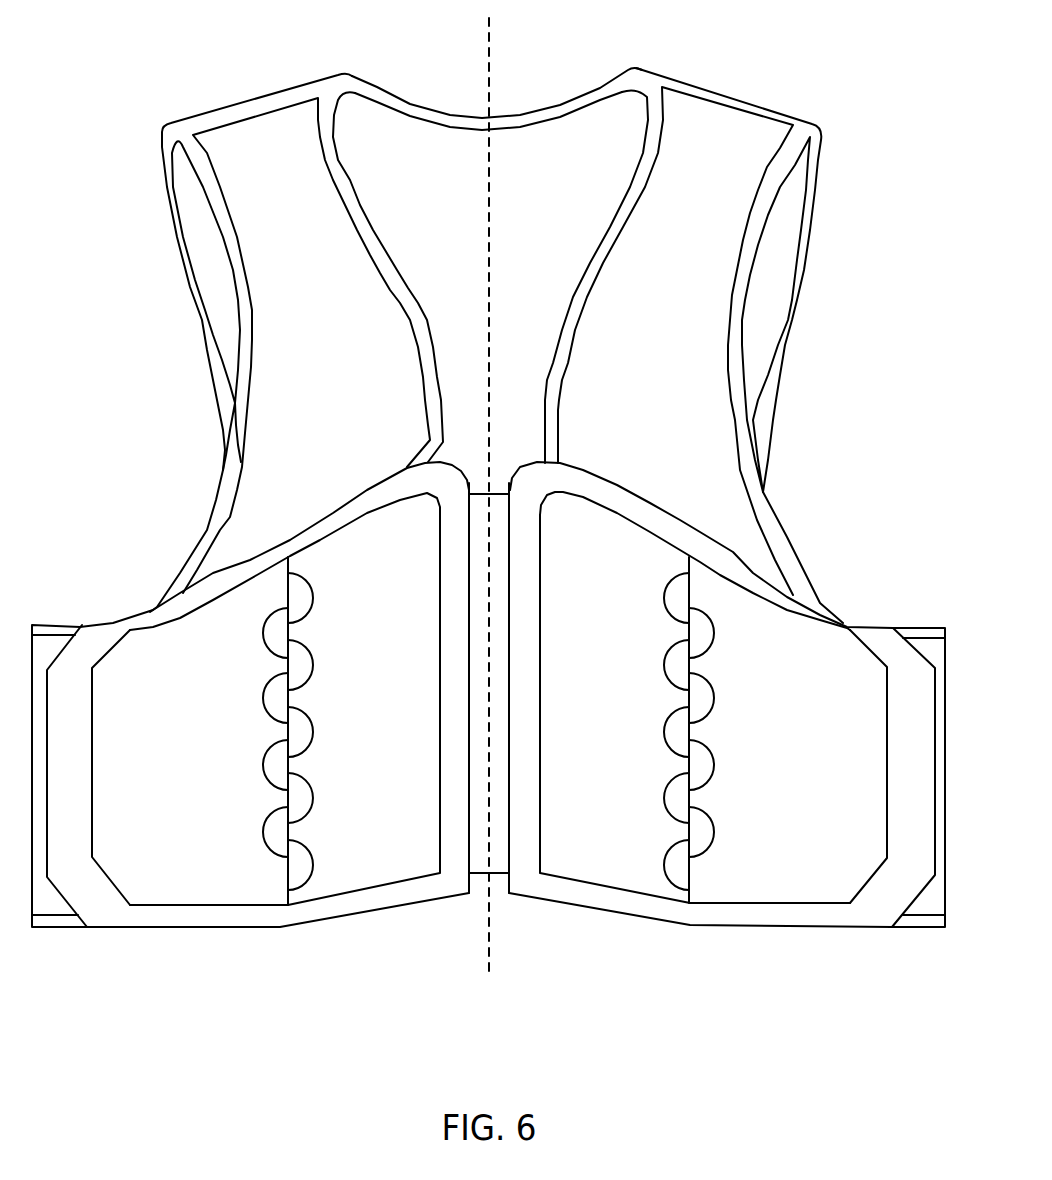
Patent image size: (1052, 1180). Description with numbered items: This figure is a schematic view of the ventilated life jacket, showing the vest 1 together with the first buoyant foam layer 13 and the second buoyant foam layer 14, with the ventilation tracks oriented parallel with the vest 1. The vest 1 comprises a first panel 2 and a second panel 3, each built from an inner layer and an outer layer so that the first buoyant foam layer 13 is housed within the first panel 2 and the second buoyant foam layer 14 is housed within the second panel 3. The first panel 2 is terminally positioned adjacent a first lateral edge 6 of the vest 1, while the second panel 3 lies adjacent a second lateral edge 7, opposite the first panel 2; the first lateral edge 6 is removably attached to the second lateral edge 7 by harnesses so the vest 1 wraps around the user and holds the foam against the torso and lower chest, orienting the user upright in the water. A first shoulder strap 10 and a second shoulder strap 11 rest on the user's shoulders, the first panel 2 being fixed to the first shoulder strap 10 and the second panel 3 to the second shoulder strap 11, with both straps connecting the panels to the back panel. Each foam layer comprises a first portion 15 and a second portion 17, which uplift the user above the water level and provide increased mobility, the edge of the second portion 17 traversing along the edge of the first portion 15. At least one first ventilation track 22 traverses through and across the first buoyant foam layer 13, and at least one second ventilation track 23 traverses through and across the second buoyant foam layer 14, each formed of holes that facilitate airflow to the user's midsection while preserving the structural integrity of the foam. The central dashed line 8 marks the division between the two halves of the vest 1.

The vest 1 is at (488, 497).
The first panel 2 is at (282, 652).
The second panel 3 is at (696, 652).
The first lateral edge 6 is at (470, 484).
The second lateral edge 7 is at (508, 484).
The center line 8 is at (489, 52).
The first shoulder strap 10 is at (270, 127).
The second shoulder strap 11 is at (757, 137).
The first buoyant foam layer 13 is at (114, 634).
The second buoyant foam layer 14 is at (872, 637).
The first portion 15 is at (312, 553).
The second portion 17 is at (255, 586).
The first ventilation track 22 is at (308, 668).
The second ventilation track 23 is at (672, 668).